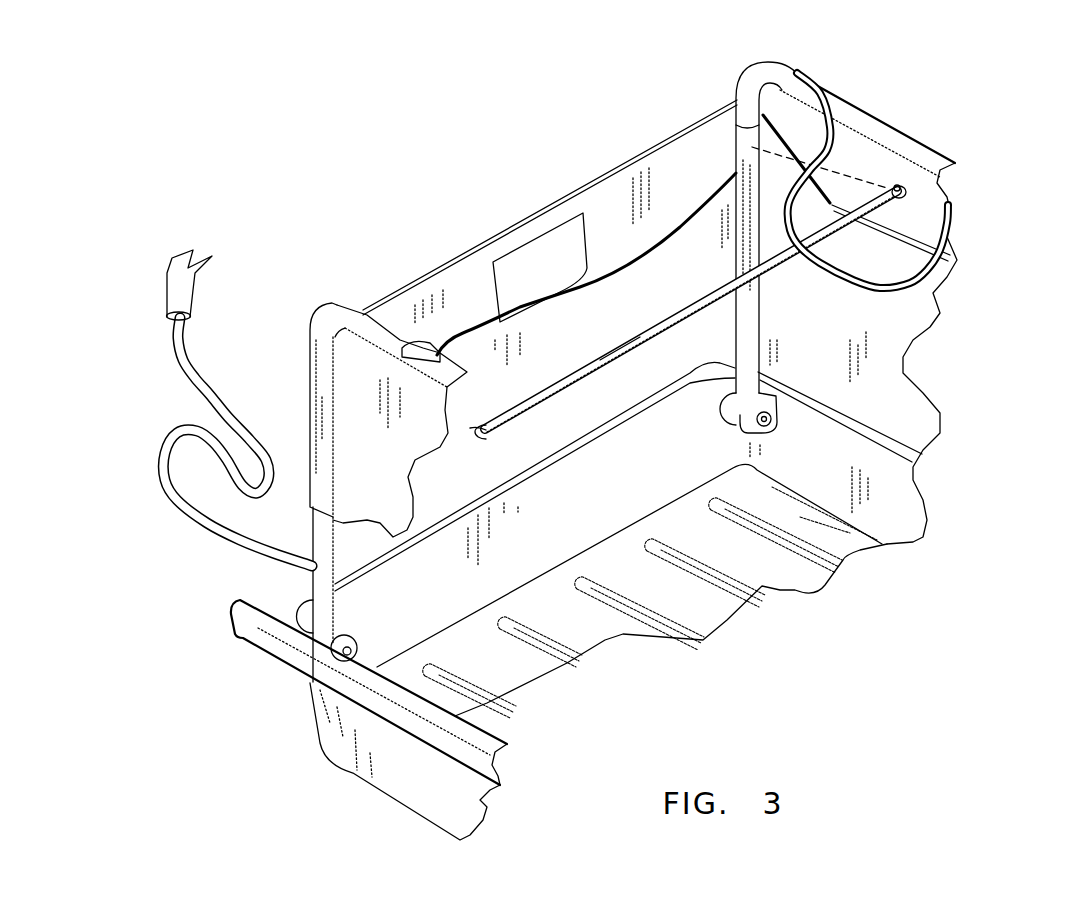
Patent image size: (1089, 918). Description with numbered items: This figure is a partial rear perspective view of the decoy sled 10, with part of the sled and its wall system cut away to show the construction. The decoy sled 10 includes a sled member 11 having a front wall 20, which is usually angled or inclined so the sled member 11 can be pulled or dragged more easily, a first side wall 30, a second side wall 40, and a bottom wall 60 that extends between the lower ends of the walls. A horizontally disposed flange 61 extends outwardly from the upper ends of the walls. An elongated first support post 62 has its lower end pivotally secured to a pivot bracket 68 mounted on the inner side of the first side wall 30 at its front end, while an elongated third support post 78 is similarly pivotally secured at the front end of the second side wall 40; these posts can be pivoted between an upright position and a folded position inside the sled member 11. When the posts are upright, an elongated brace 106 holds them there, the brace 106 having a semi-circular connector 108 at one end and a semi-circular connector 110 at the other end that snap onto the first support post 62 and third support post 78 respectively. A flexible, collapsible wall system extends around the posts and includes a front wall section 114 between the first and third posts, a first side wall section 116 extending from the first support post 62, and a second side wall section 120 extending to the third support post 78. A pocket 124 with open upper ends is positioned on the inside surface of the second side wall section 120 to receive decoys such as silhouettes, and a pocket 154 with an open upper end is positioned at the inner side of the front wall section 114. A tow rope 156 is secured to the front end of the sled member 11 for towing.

The decoy sled 10 is at (928, 119).
The sled member 11 is at (303, 729).
The front wall 20 is at (360, 592).
The first side wall 30 is at (395, 778).
The second side wall 40 is at (883, 466).
The bottom wall 60 is at (747, 570).
The flange 61 is at (273, 638).
The first support post 62 is at (340, 614).
The pivot bracket 68 is at (360, 650).
The third support post 78 is at (768, 323).
The brace 106 is at (660, 308).
The semi-circular connector 108 is at (486, 436).
The semi-circular connector 110 is at (906, 192).
The front wall section 114 is at (710, 174).
The first side wall section 116 is at (356, 462).
The second side wall section 120 is at (920, 228).
The pocket 124 is at (920, 313).
The pocket 154 is at (606, 290).
The tow rope 156 is at (205, 377).